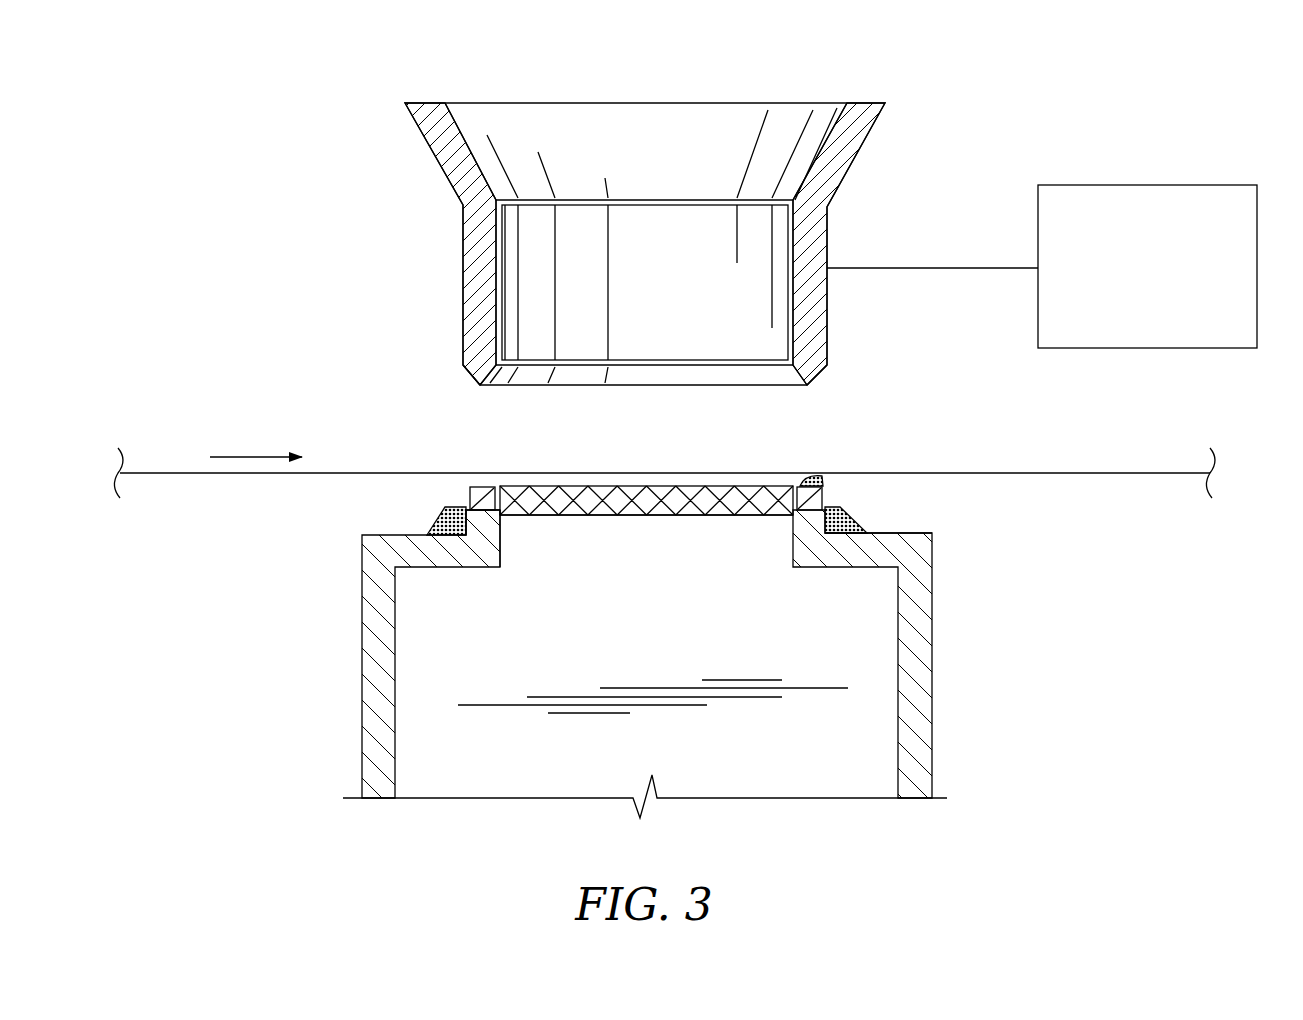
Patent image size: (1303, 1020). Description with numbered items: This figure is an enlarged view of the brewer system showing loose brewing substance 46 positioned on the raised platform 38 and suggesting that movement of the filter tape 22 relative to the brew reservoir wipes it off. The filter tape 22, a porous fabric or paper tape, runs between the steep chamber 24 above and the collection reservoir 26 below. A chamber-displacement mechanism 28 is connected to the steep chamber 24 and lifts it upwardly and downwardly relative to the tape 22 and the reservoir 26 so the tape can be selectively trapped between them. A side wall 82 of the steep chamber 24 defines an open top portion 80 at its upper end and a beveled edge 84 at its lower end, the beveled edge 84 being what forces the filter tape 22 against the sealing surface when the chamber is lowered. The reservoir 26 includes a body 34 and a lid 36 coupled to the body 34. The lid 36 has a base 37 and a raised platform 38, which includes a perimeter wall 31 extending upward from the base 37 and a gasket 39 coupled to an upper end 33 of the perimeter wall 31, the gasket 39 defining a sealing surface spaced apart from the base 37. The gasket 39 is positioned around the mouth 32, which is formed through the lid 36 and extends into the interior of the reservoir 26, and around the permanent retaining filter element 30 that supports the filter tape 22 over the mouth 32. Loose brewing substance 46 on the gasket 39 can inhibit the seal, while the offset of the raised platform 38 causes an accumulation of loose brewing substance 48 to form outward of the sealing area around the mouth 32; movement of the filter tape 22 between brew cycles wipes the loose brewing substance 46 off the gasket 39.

The filter tape 22 is at (155, 473).
The steep chamber 24 is at (478, 98).
The collection reservoir 26 is at (956, 693).
The chamber-displacement mechanism 28 is at (1215, 183).
The permanent retaining filter element 30 is at (720, 510).
The perimeter wall 31 is at (468, 536).
The mouth 32 is at (663, 527).
The upper end 33 is at (468, 490).
The body 34 is at (937, 772).
The lid 36 is at (920, 530).
The base 37 is at (423, 577).
The raised platform 38 is at (507, 527).
The gasket 39 is at (483, 485).
The loose brewing substance 46 is at (813, 482).
The accumulation of loose brewing substance 48 is at (862, 510).
The open top portion 80 is at (735, 103).
The side wall 82 is at (482, 262).
The beveled edge 84 is at (468, 386).